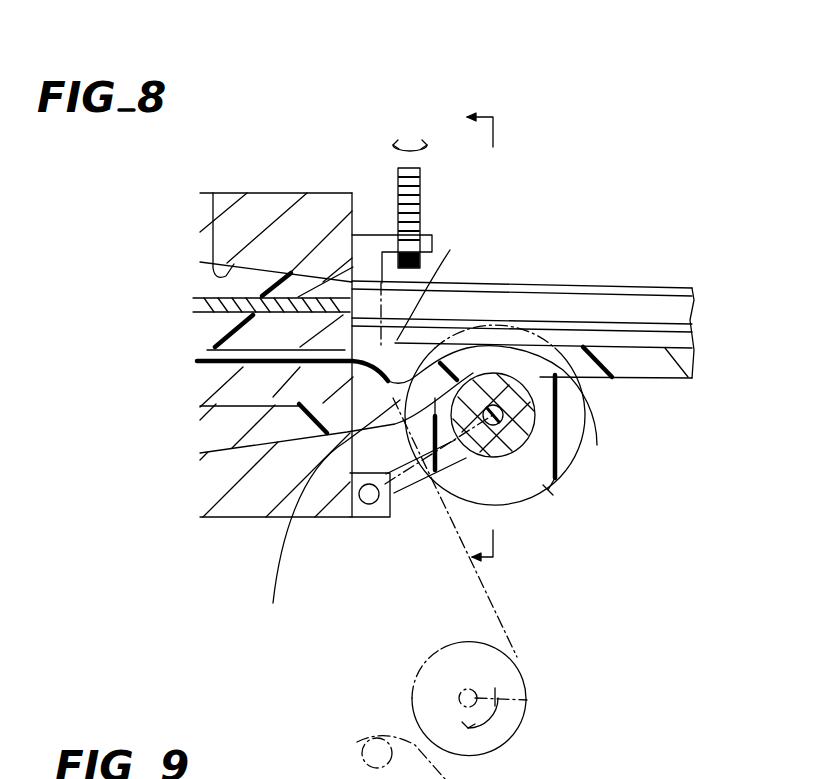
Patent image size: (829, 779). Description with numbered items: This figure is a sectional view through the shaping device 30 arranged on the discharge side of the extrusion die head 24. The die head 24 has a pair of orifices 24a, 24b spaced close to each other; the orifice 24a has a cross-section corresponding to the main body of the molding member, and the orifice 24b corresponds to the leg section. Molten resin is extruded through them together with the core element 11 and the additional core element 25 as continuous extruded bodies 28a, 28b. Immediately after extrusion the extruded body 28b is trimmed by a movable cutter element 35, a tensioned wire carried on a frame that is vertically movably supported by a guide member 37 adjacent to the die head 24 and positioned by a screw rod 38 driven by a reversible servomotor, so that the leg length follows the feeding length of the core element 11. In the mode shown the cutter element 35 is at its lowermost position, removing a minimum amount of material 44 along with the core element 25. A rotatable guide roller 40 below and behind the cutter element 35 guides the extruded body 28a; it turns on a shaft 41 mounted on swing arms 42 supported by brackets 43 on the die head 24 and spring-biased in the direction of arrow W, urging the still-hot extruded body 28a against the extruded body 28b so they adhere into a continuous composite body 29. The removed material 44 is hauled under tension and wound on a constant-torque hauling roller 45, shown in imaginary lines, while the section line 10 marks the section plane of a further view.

The section line 10 is at (458, 371).
The core element 11 is at (195, 300).
The extrusion die head 24 is at (255, 193).
The orifice 24a is at (214, 443).
The orifice 24b is at (213, 193).
The additional core element 25 is at (200, 360).
The extruded body 28a is at (257, 440).
The extruded body 28b is at (271, 285).
The continuous composite body 29 is at (607, 287).
The shaping device 30 is at (477, 262).
The movable cutter element 35 is at (432, 282).
The guide member 37 is at (432, 237).
The screw rod 38 is at (398, 185).
The rotatable guide roller 40 is at (547, 493).
The shaft 41 is at (540, 453).
The swing arms 42 is at (417, 480).
The brackets 43 is at (358, 515).
The removed material 44 is at (570, 625).
The hauling roller 45 is at (527, 700).
The arrow W is at (540, 403).